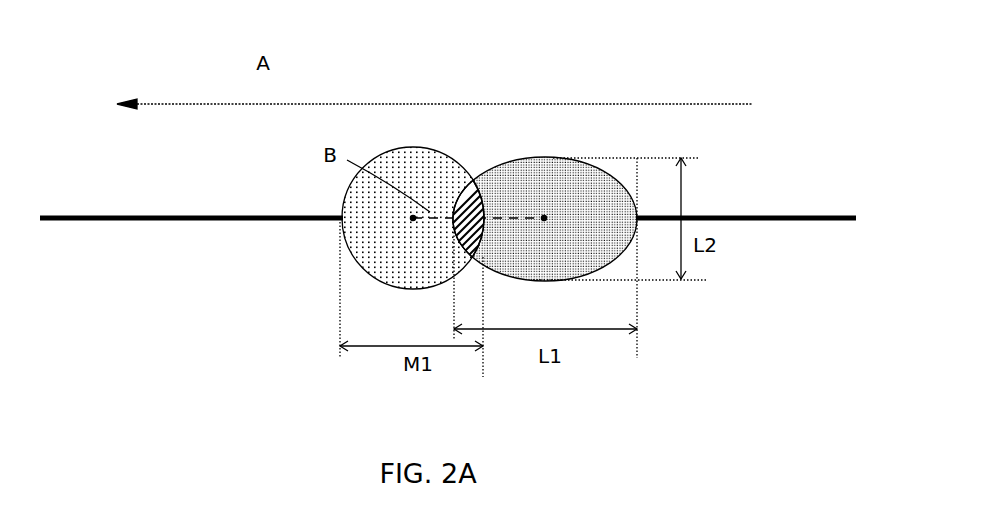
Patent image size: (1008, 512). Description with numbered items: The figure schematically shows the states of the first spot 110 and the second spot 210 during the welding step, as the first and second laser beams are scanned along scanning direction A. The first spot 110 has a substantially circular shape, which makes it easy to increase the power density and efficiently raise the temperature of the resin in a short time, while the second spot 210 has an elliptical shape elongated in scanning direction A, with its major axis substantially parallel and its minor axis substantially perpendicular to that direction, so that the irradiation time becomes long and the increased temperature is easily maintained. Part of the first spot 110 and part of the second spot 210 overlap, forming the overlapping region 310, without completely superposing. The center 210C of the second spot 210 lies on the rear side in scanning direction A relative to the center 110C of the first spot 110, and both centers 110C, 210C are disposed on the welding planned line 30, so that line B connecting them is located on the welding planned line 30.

The welding planned line 30 is at (817, 220).
The first spot 110 is at (387, 284).
The center of first spot 110C is at (400, 220).
The second spot 210 is at (522, 279).
The center of second spot 210C is at (542, 215).
The overlapping region 310 is at (467, 187).